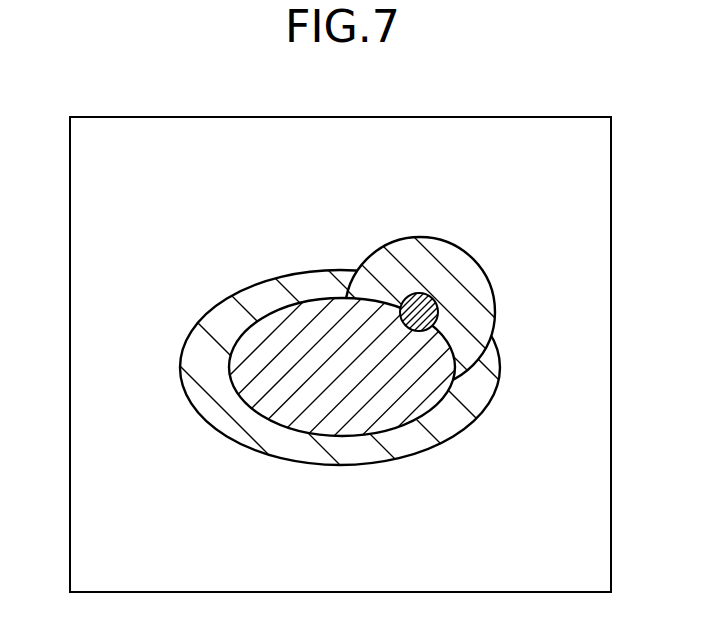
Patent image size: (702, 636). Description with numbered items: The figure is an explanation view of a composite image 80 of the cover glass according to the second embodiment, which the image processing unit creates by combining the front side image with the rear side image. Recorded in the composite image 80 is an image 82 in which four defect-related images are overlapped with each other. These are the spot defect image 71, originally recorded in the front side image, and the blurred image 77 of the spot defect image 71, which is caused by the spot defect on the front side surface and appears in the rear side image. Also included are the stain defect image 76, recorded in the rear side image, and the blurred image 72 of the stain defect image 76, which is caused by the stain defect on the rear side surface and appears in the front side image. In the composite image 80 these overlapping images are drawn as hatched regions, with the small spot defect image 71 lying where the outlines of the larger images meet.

The composite image 80 is at (182, 92).
The image 82 is at (242, 246).
The blurred image 72 is at (275, 442).
The stain defect image 76 is at (370, 418).
The blurred image 77 is at (465, 267).
The spot defect image 71 is at (437, 311).